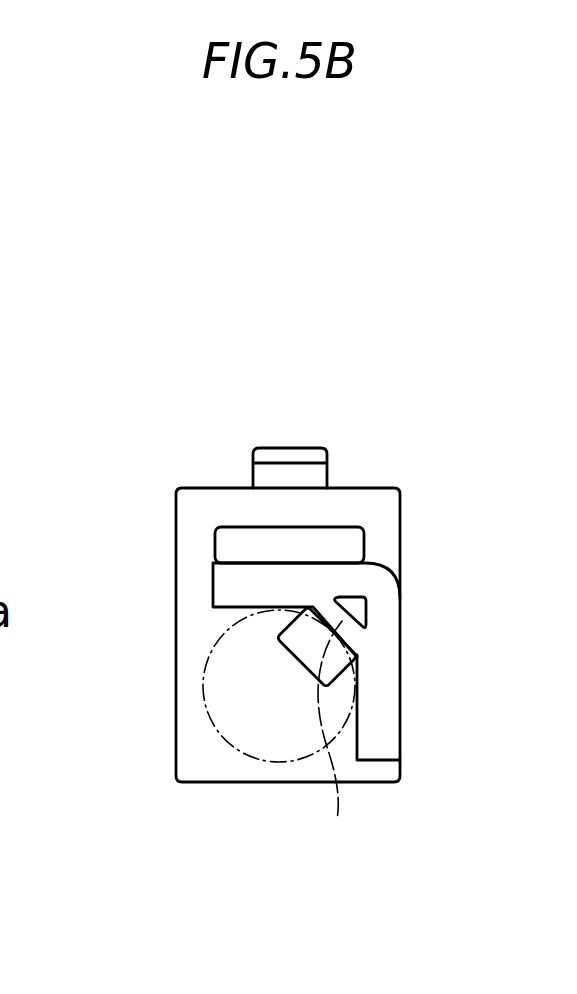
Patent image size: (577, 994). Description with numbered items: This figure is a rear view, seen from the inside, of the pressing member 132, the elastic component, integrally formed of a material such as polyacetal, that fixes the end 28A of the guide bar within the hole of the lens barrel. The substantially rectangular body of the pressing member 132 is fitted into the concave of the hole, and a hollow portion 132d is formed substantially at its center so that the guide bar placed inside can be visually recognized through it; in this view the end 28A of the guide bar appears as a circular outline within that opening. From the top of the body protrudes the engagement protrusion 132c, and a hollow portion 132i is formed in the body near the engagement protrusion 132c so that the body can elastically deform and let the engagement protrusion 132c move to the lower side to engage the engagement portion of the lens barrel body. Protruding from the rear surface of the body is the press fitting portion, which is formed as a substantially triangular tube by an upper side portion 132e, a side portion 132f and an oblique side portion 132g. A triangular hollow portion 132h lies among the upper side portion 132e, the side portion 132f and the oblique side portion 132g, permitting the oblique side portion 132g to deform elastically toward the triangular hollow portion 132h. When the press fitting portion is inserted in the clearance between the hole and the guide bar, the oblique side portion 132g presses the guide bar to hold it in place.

The pressing member 132 is at (385, 422).
The engagement protrusion 132c is at (285, 453).
The hollow portion 132d is at (305, 643).
The upper side portion 132e is at (235, 583).
The side portion 132f is at (375, 718).
The oblique side portion 132g is at (338, 749).
The triangular hollow portion 132h is at (542, 559).
The hollow portion 132i is at (240, 543).
The end of the guide bar 28A is at (217, 727).